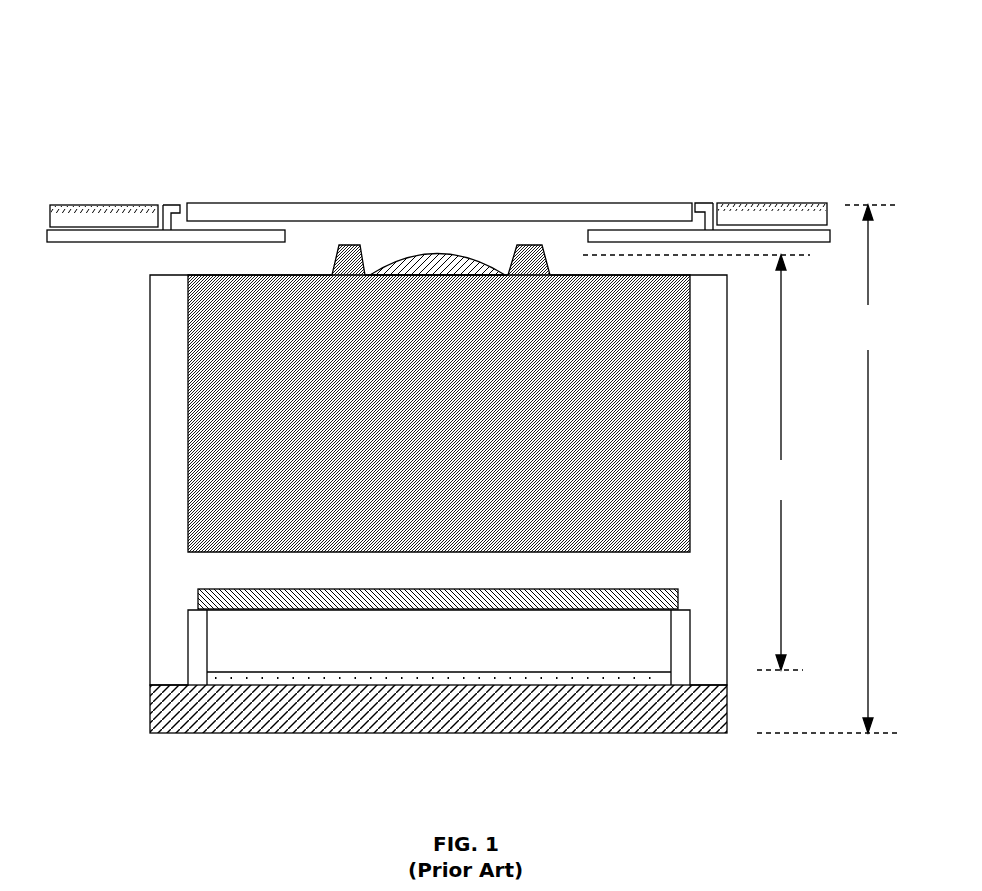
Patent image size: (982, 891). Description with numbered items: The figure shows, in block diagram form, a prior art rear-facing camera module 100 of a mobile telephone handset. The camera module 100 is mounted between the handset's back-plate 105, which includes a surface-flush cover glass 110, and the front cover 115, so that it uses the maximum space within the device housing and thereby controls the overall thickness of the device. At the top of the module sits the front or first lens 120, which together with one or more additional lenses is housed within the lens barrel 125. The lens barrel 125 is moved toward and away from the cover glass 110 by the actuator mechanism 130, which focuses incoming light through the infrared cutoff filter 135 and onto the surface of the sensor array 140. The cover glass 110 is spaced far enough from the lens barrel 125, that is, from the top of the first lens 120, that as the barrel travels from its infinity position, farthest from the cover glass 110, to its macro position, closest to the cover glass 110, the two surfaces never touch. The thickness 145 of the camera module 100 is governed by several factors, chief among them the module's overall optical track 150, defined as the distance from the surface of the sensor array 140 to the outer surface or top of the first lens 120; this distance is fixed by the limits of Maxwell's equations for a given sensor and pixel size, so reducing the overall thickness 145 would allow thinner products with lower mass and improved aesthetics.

The camera module 100 is at (148, 76).
The back-plate 105 is at (105, 203).
The cover glass 110 is at (272, 203).
The front cover 115 is at (150, 708).
The first lens 120 is at (458, 258).
The lens barrel 125 is at (439, 398).
The actuator mechanism 130 is at (150, 436).
The infrared cutoff filter 135 is at (442, 610).
The sensor array 140 is at (355, 672).
The thickness 145 is at (827, 469).
The optical track 150 is at (696, 462).